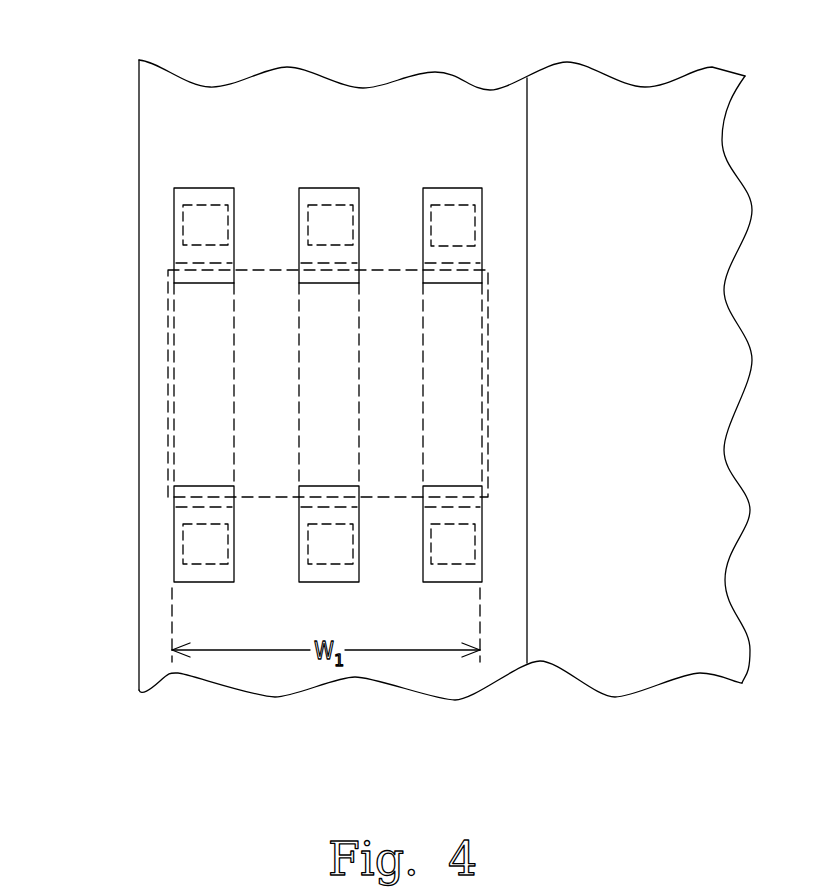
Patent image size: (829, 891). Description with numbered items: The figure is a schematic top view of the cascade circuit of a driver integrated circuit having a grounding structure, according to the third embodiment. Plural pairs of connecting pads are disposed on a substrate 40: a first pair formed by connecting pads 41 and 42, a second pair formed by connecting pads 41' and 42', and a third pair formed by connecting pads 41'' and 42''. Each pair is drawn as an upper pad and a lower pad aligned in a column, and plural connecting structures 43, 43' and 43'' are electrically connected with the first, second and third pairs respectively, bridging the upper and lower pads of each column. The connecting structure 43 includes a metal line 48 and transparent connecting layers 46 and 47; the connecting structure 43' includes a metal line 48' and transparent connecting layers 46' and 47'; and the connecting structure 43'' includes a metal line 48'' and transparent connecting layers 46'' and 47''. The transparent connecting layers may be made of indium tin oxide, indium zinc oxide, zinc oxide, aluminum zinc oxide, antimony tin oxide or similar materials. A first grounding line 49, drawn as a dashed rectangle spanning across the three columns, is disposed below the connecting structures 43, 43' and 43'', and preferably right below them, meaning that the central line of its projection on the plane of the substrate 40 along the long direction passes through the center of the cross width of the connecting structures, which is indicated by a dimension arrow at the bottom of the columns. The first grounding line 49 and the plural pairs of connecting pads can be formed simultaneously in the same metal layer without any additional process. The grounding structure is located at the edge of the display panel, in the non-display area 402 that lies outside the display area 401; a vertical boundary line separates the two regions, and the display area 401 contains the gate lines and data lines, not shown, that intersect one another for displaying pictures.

The substrate 40 is at (417, 72).
The display area 401 is at (626, 688).
The non-display area 402 is at (275, 688).
The connecting pad 41 is at (453, 576).
The connecting pad 41' is at (330, 575).
The connecting pad 41'' is at (205, 575).
The connecting pad 42 is at (454, 192).
The connecting pad 42' is at (333, 191).
The connecting pad 42'' is at (210, 191).
The connecting structure 43 is at (525, 383).
The connecting structure 43' is at (375, 382).
The connecting structure 43'' is at (137, 382).
The transparent connecting layer 46 is at (503, 247).
The transparent connecting layer 46' is at (350, 246).
The transparent connecting layer 46'' is at (161, 245).
The transparent connecting layer 47 is at (503, 505).
The transparent connecting layer 47' is at (350, 505).
The transparent connecting layer 47'' is at (159, 504).
The metal line 48 is at (503, 384).
The metal line 48' is at (350, 384).
The metal line 48'' is at (159, 384).
The first grounding line 49 is at (285, 268).